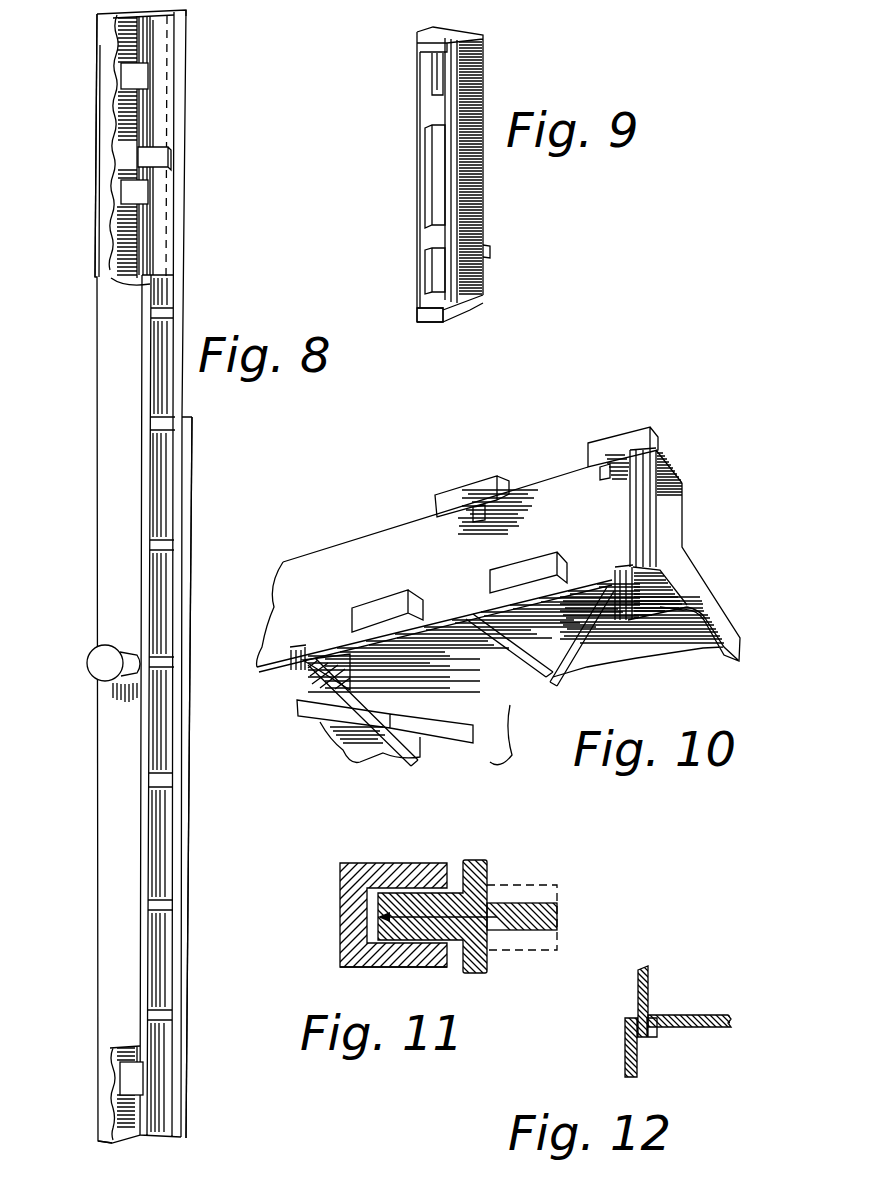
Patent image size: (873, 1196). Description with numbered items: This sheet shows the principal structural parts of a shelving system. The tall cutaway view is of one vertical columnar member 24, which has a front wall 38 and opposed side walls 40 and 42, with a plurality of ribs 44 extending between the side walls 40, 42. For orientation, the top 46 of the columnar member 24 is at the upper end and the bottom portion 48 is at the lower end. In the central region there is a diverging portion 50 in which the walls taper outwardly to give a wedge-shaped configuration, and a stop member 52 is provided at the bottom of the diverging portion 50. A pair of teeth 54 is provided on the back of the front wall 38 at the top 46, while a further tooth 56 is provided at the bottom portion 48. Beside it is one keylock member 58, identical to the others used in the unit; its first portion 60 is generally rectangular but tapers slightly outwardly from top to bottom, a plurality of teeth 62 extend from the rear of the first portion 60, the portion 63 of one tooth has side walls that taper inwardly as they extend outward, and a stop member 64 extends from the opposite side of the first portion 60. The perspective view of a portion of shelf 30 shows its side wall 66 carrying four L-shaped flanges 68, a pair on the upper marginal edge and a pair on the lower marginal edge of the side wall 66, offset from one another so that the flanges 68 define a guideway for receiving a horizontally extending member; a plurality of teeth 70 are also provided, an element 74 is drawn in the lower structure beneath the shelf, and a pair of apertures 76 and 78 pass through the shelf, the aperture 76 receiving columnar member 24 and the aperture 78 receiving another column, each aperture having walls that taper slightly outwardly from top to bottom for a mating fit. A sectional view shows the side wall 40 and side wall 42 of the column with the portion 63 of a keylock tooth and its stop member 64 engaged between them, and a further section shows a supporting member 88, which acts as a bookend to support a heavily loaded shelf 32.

In FIG. 8, the vertical columnar member 24 is at (88, 98).
In FIG. 10, the shelf 30 is at (730, 610).
In FIG. 12, the shelf 32 is at (702, 1009).
In FIG. 8, the front wall 38 is at (120, 152).
In FIG. 8, the side wall 40 is at (168, 132).
In FIG. 11, the side wall 40 is at (390, 870).
In FIG. 8, the side wall 42 is at (132, 353).
In FIG. 11, the side wall 42 is at (433, 967).
In FIG. 8, the ribs 44 is at (168, 315).
In FIG. 8, the top 46 is at (197, 78).
In FIG. 8, the bottom portion 48 is at (186, 1146).
In FIG. 8, the diverging portion 50 is at (198, 604).
In FIG. 8, the stop member 52 is at (105, 656).
In FIG. 8, the teeth 54 is at (143, 69).
In FIG. 8, the tooth 56 is at (138, 1078).
In FIG. 9, the keylock member 58 is at (496, 67).
In FIG. 9, the first portion 60 is at (483, 108).
In FIG. 9, the teeth 62 is at (428, 265).
In FIG. 9, the portion 63 is at (440, 320).
In FIG. 11, the portion 63 is at (430, 895).
In FIG. 9, the stop member 64 is at (491, 250).
In FIG. 11, the stop member 64 is at (558, 920).
In FIG. 10, the side wall 66 is at (363, 585).
In FIG. 10, the L-shaped flanges 68 is at (493, 477).
In FIG. 10, the teeth 70 is at (655, 520).
In FIG. 10, the brace 74 is at (460, 743).
In FIG. 10, the aperture 76 is at (661, 593).
In FIG. 10, the aperture 78 is at (310, 665).
In FIG. 12, the supporting member 88 is at (650, 992).